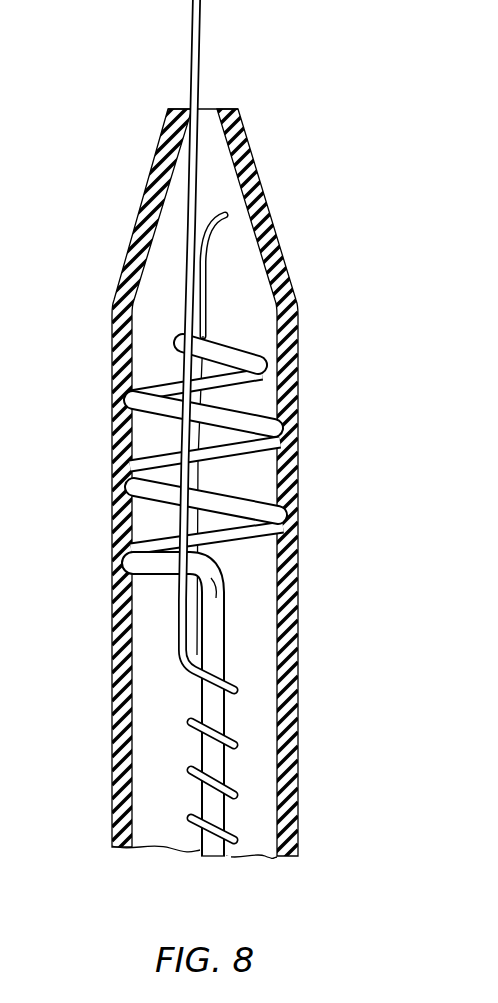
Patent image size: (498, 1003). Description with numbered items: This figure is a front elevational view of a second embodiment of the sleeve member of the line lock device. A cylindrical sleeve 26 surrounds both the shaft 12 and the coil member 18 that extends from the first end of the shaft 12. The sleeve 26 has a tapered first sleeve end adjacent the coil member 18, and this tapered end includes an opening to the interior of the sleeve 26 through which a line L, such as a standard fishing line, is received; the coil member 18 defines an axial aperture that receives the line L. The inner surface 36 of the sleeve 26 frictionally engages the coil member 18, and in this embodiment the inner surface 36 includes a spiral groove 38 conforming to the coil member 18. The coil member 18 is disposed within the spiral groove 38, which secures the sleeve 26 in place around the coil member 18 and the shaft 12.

The shaft 12 is at (200, 853).
The coil member 18 is at (154, 451).
The cylindrical sleeve 26 is at (313, 518).
The inner surface 36 is at (263, 285).
The spiral groove 38 is at (258, 569).
The line L is at (230, 25).